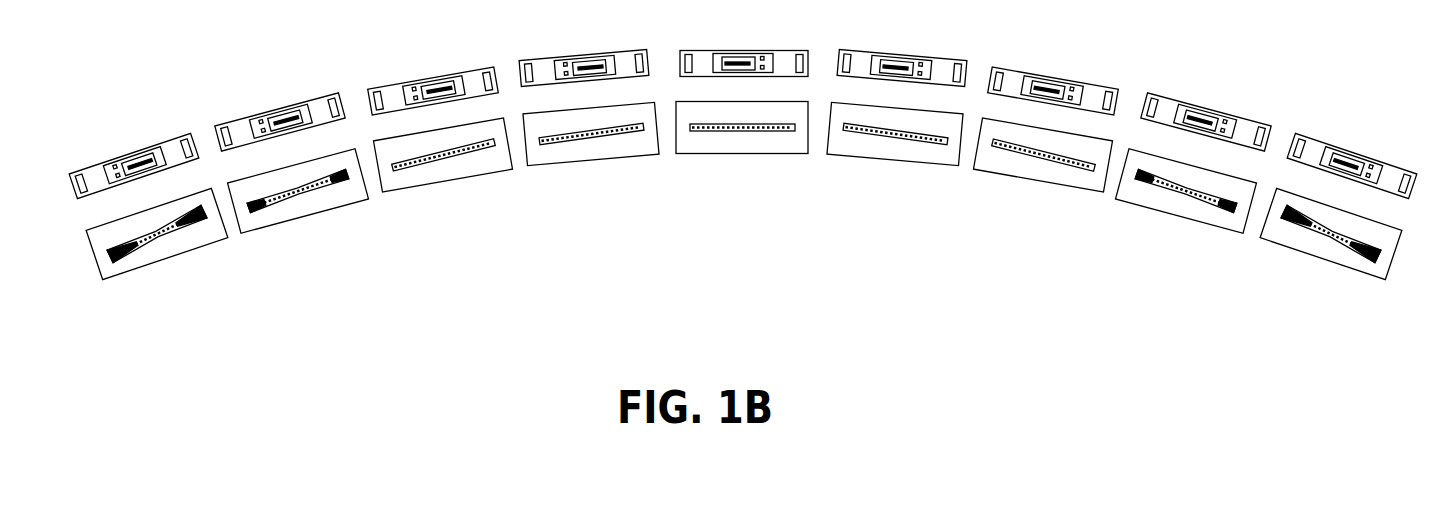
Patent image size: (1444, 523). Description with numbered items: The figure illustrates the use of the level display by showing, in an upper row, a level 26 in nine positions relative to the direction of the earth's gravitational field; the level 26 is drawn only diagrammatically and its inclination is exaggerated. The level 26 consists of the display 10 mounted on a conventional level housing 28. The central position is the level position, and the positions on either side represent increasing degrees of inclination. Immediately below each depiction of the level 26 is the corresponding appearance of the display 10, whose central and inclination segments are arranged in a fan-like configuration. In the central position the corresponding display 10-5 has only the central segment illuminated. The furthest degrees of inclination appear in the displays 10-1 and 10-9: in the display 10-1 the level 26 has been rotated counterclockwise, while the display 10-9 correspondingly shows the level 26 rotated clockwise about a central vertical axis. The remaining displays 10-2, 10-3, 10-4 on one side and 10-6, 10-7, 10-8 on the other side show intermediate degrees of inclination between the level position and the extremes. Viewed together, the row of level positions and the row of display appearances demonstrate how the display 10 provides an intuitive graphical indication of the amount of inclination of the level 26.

The level 26 is at (128, 110).
The level housing 28 is at (183, 163).
The display 10 is at (110, 186).
The display 10-1 is at (153, 261).
The display 10-2 is at (297, 219).
The display 10-3 is at (443, 180).
The display 10-4 is at (582, 160).
The display 10-5 is at (728, 155).
The display 10-6 is at (905, 164).
The display 10-7 is at (1050, 185).
The display 10-8 is at (1190, 218).
The display 10-9 is at (1330, 262).